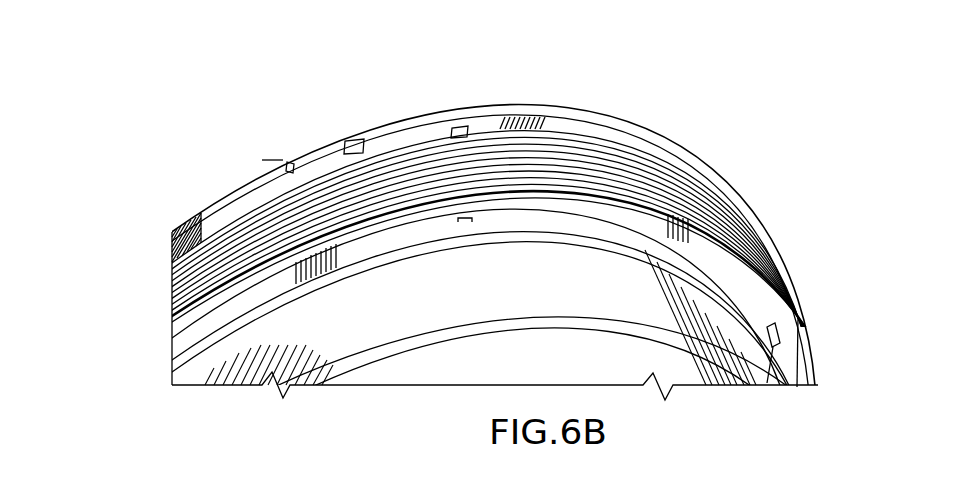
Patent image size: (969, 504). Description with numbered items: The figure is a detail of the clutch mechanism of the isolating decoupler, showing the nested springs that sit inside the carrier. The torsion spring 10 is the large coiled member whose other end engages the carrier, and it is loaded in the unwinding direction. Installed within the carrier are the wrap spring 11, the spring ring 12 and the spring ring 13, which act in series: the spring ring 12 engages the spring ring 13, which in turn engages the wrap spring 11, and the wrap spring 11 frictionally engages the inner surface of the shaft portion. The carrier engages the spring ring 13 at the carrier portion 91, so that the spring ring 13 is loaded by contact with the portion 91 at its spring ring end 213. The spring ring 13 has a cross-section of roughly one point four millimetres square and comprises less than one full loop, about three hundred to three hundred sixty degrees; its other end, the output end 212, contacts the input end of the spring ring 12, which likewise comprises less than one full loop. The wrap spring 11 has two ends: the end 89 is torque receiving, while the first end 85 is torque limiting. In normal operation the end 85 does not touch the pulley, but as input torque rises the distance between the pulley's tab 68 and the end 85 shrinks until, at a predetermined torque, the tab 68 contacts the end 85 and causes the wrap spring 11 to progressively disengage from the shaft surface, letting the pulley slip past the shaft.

The torsion spring 10 is at (237, 370).
The wrap spring 11 is at (188, 318).
The spring ring 12 is at (322, 166).
The spring ring 13 is at (580, 122).
The tab 68 is at (778, 334).
The first end 85 is at (458, 220).
The end 89 is at (448, 137).
The portion 91 is at (297, 157).
The end 212 is at (368, 150).
The spring ring end 213 is at (283, 160).